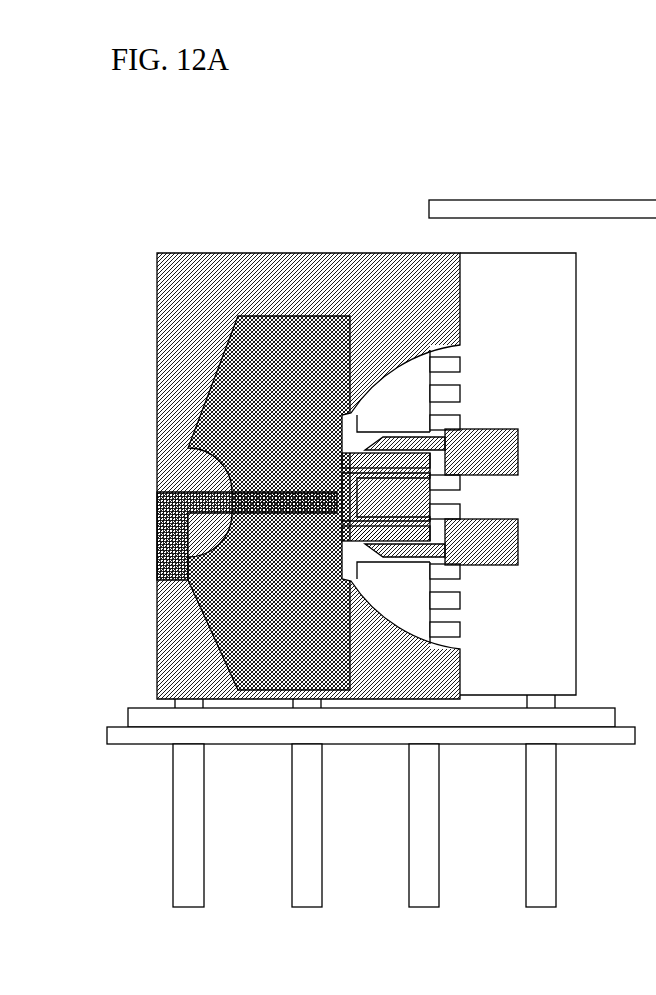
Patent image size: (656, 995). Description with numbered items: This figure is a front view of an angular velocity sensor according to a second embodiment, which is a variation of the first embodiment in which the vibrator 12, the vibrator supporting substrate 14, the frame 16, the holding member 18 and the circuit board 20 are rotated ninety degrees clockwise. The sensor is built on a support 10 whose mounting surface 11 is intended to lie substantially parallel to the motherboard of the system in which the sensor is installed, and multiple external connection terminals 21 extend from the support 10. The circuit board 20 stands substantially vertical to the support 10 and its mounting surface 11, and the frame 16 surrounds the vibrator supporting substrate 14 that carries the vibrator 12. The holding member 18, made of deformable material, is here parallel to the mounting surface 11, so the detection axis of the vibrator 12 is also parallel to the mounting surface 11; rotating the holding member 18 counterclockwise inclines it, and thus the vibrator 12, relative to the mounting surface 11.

The support 10 is at (130, 712).
The mounting surface 11 is at (135, 739).
The vibrator 12 is at (512, 452).
The vibrator supporting substrate 14 is at (254, 328).
The frame 16 is at (309, 449).
The holding member 18 is at (165, 501).
The circuit board 20 is at (567, 387).
The external connection terminals 21 is at (545, 848).